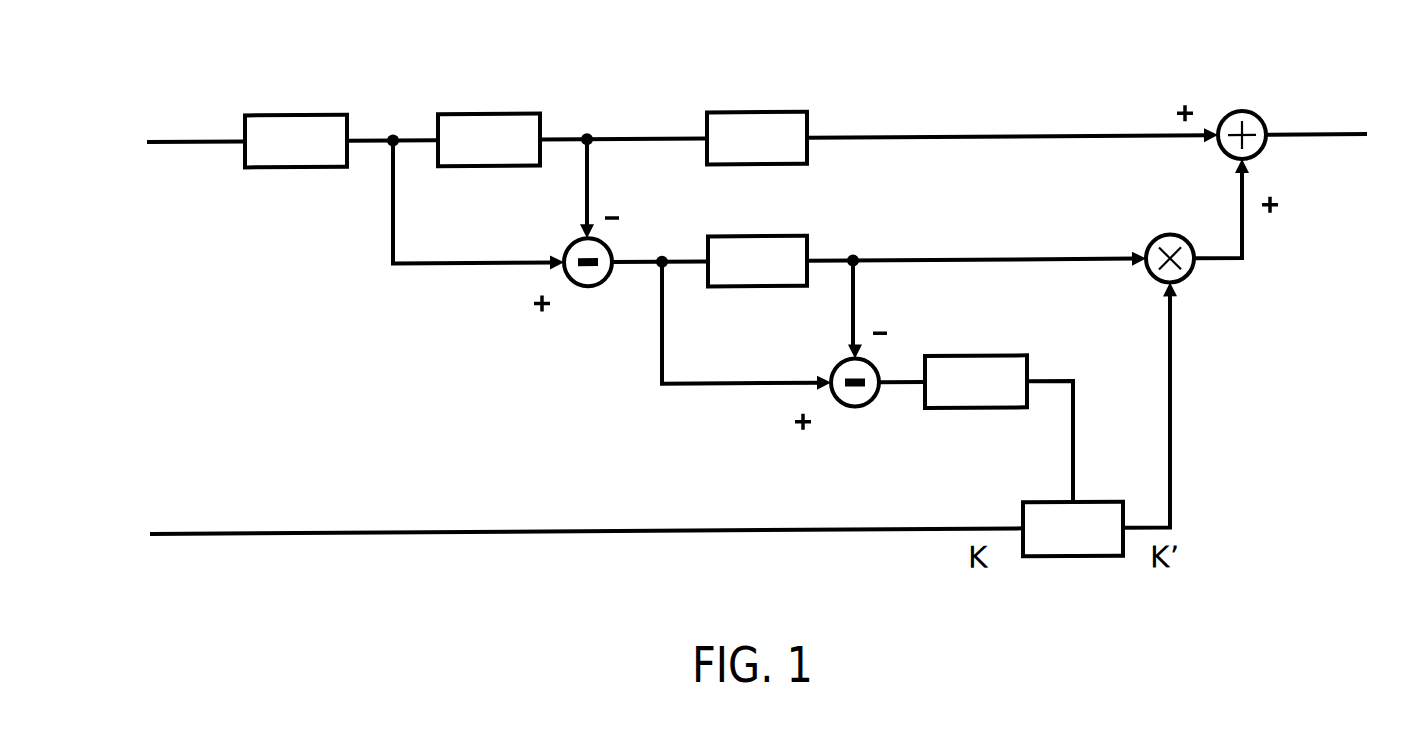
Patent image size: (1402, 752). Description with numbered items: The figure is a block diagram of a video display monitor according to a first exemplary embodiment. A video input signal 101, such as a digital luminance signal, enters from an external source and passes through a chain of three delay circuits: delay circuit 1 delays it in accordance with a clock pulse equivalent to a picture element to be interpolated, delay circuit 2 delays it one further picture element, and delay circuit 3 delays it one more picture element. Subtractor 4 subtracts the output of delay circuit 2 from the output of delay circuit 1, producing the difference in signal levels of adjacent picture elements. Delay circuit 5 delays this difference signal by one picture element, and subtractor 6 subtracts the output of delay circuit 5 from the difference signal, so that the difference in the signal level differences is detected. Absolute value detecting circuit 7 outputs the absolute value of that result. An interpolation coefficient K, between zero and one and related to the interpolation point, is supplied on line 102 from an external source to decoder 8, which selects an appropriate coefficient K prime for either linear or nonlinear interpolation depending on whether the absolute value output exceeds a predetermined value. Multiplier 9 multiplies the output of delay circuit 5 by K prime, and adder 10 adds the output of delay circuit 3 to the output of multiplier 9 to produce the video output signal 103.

The delay circuit 1 is at (297, 117).
The delay circuit 2 is at (490, 118).
The delay circuit 3 is at (757, 118).
The subtractor 4 is at (612, 252).
The delay circuit 5 is at (760, 241).
The subtractor 6 is at (845, 366).
The absolute value detecting circuit 7 is at (975, 362).
The decoder 8 is at (1050, 509).
The multiplier 9 is at (1170, 242).
The adder 10 is at (1242, 119).
The video input signal 101 is at (198, 142).
The coefficient input terminal 102 is at (200, 534).
The video output signal 103 is at (1318, 142).